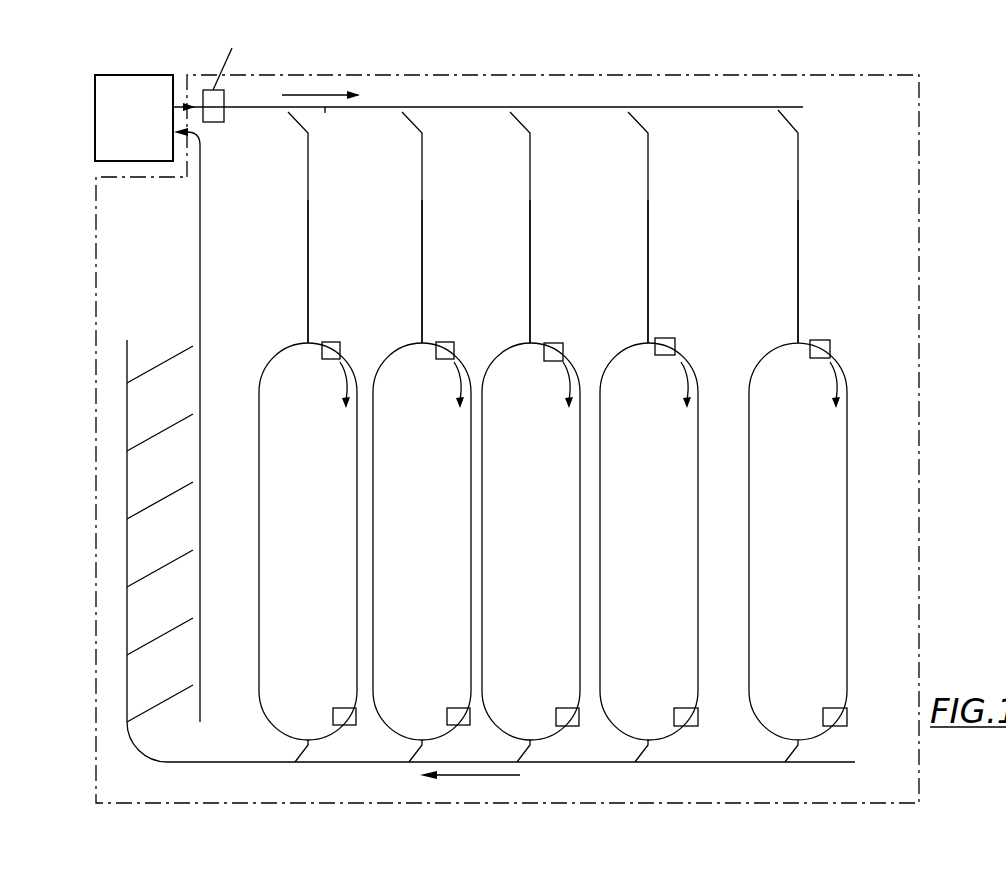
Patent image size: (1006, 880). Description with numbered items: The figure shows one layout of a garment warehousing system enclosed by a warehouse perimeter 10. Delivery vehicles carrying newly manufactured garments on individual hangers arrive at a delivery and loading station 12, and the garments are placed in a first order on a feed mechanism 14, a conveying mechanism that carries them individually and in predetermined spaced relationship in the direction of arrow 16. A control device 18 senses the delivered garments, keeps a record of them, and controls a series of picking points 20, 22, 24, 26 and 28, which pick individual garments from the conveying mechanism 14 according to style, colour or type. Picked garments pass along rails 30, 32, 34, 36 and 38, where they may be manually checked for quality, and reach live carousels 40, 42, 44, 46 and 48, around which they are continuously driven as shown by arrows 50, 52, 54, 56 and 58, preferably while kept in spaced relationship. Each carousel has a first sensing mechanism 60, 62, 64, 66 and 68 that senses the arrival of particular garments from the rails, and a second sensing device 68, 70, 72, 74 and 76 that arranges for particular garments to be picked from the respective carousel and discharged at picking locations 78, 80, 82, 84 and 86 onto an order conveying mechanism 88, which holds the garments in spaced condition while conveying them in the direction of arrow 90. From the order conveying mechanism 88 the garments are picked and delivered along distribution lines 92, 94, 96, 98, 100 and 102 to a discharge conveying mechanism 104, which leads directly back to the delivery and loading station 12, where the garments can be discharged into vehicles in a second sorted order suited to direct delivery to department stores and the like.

The warehouse perimeter 10 is at (919, 143).
The delivery and loading station 12 is at (95, 108).
The feed mechanism 14 is at (536, 107).
The arrow 16 is at (325, 107).
The control device 18 is at (224, 99).
The picking point 20 is at (296, 121).
The picking point 22 is at (410, 121).
The picking point 24 is at (518, 121).
The picking point 26 is at (636, 121).
The picking point 28 is at (787, 123).
The rail 30 is at (308, 272).
The rail 32 is at (422, 272).
The rail 34 is at (530, 272).
The rail 36 is at (648, 272).
The rail 38 is at (798, 272).
The live carousel 40 is at (280, 353).
The live carousel 42 is at (394, 353).
The live carousel 44 is at (504, 353).
The live carousel 46 is at (614, 353).
The live carousel 48 is at (758, 355).
The arrow 50 is at (338, 378).
The arrow 52 is at (451, 378).
The arrow 54 is at (550, 378).
The arrow 56 is at (673, 378).
The arrow 58 is at (823, 378).
The first sensing mechanism 60 is at (344, 332).
The first sensing mechanism 62 is at (456, 332).
The first sensing mechanism 64 is at (555, 343).
The first sensing mechanism 66 is at (668, 338).
The first sensing mechanism / second sensing device 68 is at (831, 340).
The second sensing device 70 is at (447, 708).
The second sensing device 72 is at (557, 708).
The second sensing device 74 is at (672, 708).
The second sensing device 76 is at (819, 708).
The picking location 78 is at (302, 751).
The picking location 80 is at (418, 751).
The picking location 82 is at (526, 751).
The picking location 84 is at (645, 751).
The picking location 86 is at (794, 751).
The order conveying mechanism 88 is at (127, 557).
The arrow 90 is at (497, 775).
The distribution line 92 is at (160, 373).
The distribution line 94 is at (160, 441).
The distribution line 96 is at (160, 508).
The distribution line 98 is at (160, 576).
The distribution line 100 is at (164, 631).
The distribution line 102 is at (164, 701).
The discharge conveying mechanism 104 is at (200, 393).